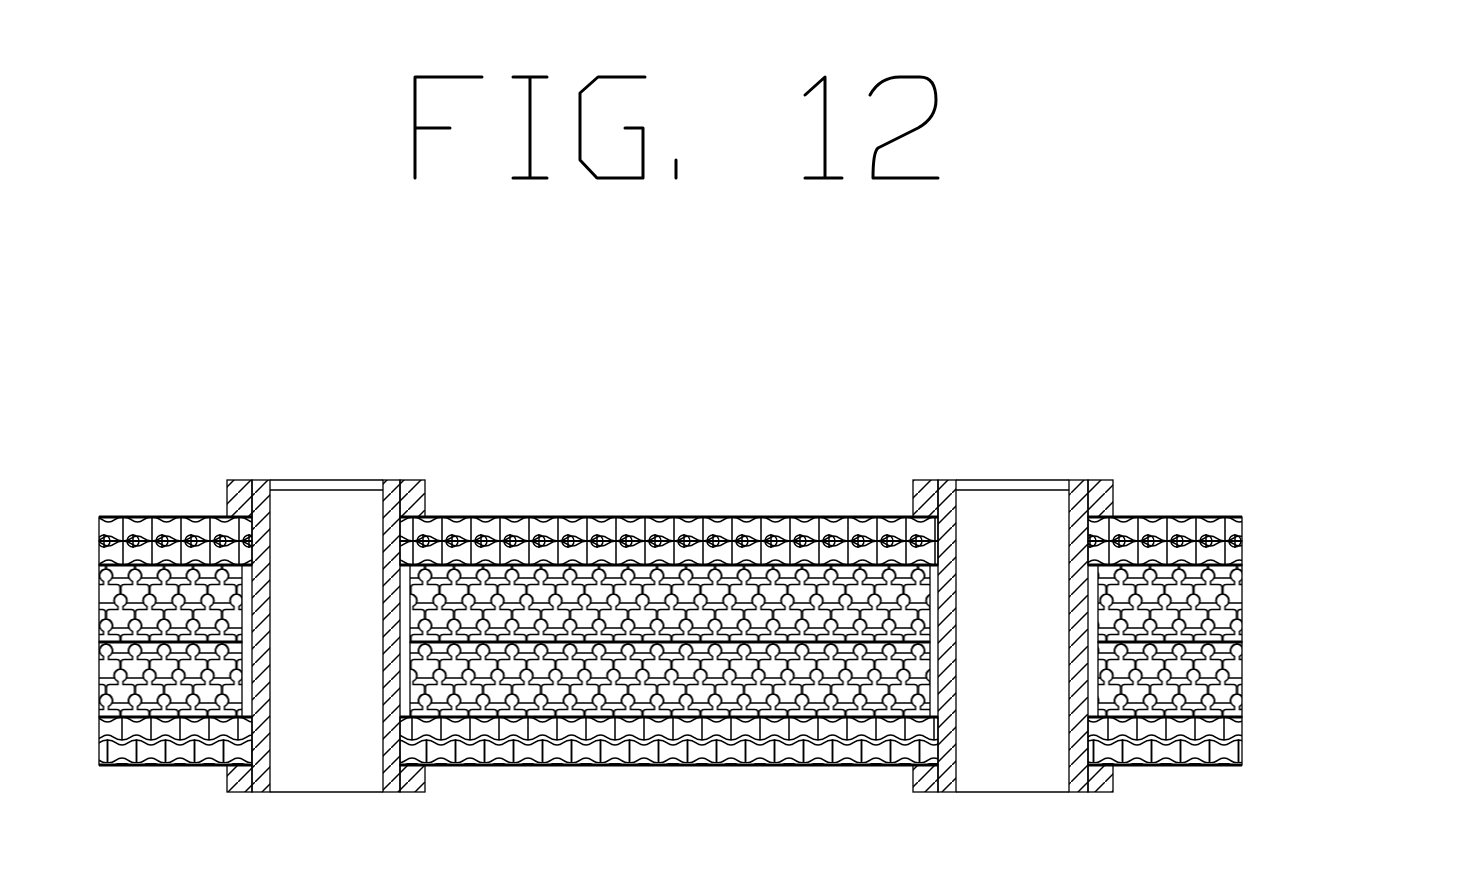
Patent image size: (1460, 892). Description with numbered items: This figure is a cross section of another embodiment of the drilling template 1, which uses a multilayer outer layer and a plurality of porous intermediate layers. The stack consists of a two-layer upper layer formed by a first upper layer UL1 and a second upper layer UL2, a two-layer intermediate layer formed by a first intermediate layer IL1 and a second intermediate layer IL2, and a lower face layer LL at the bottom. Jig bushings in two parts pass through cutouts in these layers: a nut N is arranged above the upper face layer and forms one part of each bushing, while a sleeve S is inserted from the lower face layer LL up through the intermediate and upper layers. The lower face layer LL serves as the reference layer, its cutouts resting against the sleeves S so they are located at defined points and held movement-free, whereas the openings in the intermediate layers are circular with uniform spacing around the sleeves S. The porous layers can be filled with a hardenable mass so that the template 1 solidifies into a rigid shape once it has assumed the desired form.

The drilling template 1 is at (1289, 378).
The nut N is at (412, 480).
The sleeve S is at (408, 792).
The first upper layer UL1 is at (1243, 525).
The second upper layer UL2 is at (1243, 560).
The first intermediate layer IL1 is at (1410, 620).
The second intermediate layer IL2 is at (1408, 687).
The lower face layer LL is at (1243, 742).